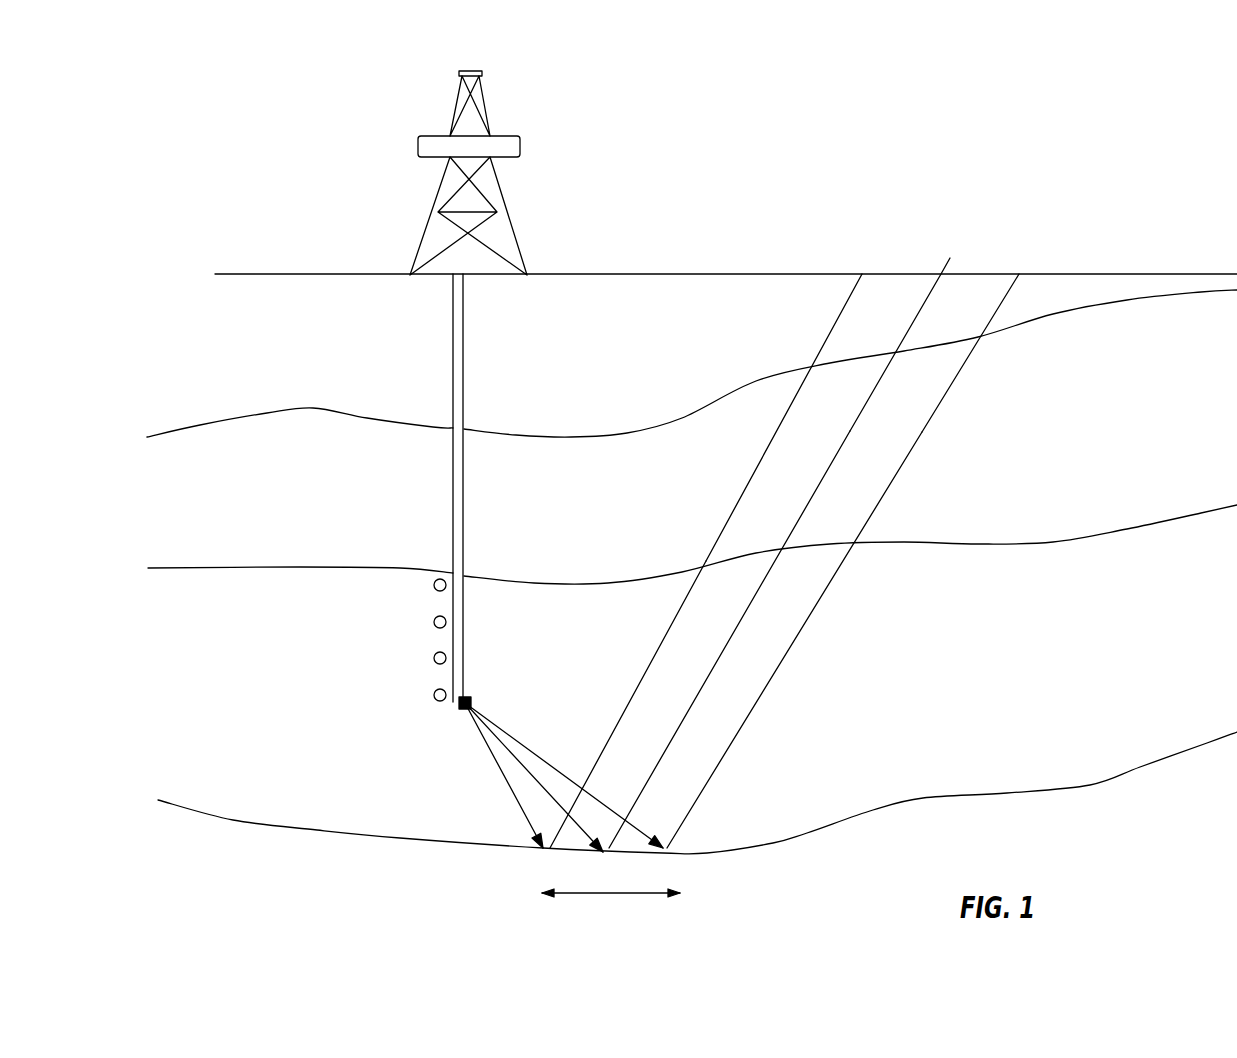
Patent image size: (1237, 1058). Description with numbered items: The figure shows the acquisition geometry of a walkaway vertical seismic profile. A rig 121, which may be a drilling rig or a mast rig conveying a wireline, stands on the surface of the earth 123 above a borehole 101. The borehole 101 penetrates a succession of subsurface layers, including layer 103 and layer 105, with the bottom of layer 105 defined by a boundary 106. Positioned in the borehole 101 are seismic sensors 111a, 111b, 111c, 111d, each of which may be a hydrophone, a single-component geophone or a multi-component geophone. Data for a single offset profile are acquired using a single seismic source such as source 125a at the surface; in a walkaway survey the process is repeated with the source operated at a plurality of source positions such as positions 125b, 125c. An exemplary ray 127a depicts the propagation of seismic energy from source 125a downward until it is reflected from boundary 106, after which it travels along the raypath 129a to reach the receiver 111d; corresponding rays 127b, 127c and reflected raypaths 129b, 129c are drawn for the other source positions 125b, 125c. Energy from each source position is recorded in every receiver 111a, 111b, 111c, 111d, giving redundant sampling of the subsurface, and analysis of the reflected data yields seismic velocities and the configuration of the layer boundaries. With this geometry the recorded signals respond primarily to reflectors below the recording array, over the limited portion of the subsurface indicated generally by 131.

The borehole 101 is at (453, 362).
The layer 103 is at (183, 369).
The layer 105 is at (183, 528).
The boundary 106 is at (207, 815).
The seismic sensor 111a is at (435, 589).
The seismic sensor 111b is at (435, 626).
The seismic sensor 111c is at (435, 662).
The seismic sensor 111d is at (435, 699).
The rig 121 is at (488, 132).
The surface of the earth 123 is at (681, 274).
The seismic source 125a is at (865, 279).
The source position 125b is at (937, 290).
The source position 125c is at (1018, 292).
The ray 127a is at (726, 530).
The ray 127b is at (801, 513).
The ray 127c is at (910, 461).
The raypath 129a is at (488, 747).
The raypath 129b is at (523, 768).
The raypath 129c is at (512, 733).
The portion of the subsurface 131 is at (628, 935).